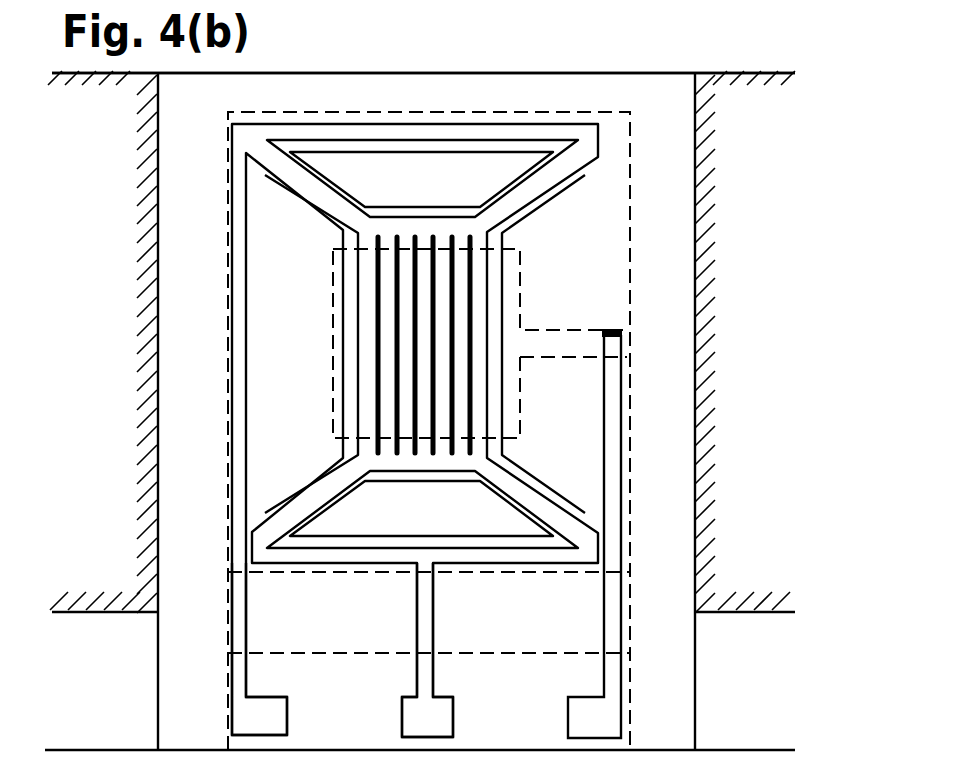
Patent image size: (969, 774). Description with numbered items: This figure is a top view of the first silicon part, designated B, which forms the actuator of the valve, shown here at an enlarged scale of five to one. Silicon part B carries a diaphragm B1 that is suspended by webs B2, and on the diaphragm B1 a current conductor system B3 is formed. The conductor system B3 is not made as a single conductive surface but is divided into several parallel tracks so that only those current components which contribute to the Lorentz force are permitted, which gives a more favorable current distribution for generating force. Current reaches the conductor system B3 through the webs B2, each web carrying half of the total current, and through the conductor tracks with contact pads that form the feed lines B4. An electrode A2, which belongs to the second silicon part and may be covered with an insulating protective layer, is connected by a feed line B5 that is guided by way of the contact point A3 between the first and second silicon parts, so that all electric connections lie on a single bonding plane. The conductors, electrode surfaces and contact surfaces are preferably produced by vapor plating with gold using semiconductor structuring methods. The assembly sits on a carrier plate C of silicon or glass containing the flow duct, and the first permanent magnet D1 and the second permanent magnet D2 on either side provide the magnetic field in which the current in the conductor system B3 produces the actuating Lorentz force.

The electrode A2 is at (518, 303).
The contact A3 is at (612, 343).
The silicon part 1 B is at (517, 97).
The diaphragm B1 is at (351, 281).
The webs B2 is at (513, 498).
The current conductor system B3 is at (538, 388).
The feed lines B4 is at (472, 610).
The feed line B5 is at (613, 610).
The carrier plate C is at (423, 36).
The permanent magnet 1 D1 is at (123, 308).
The permanent magnet 2 D2 is at (727, 298).